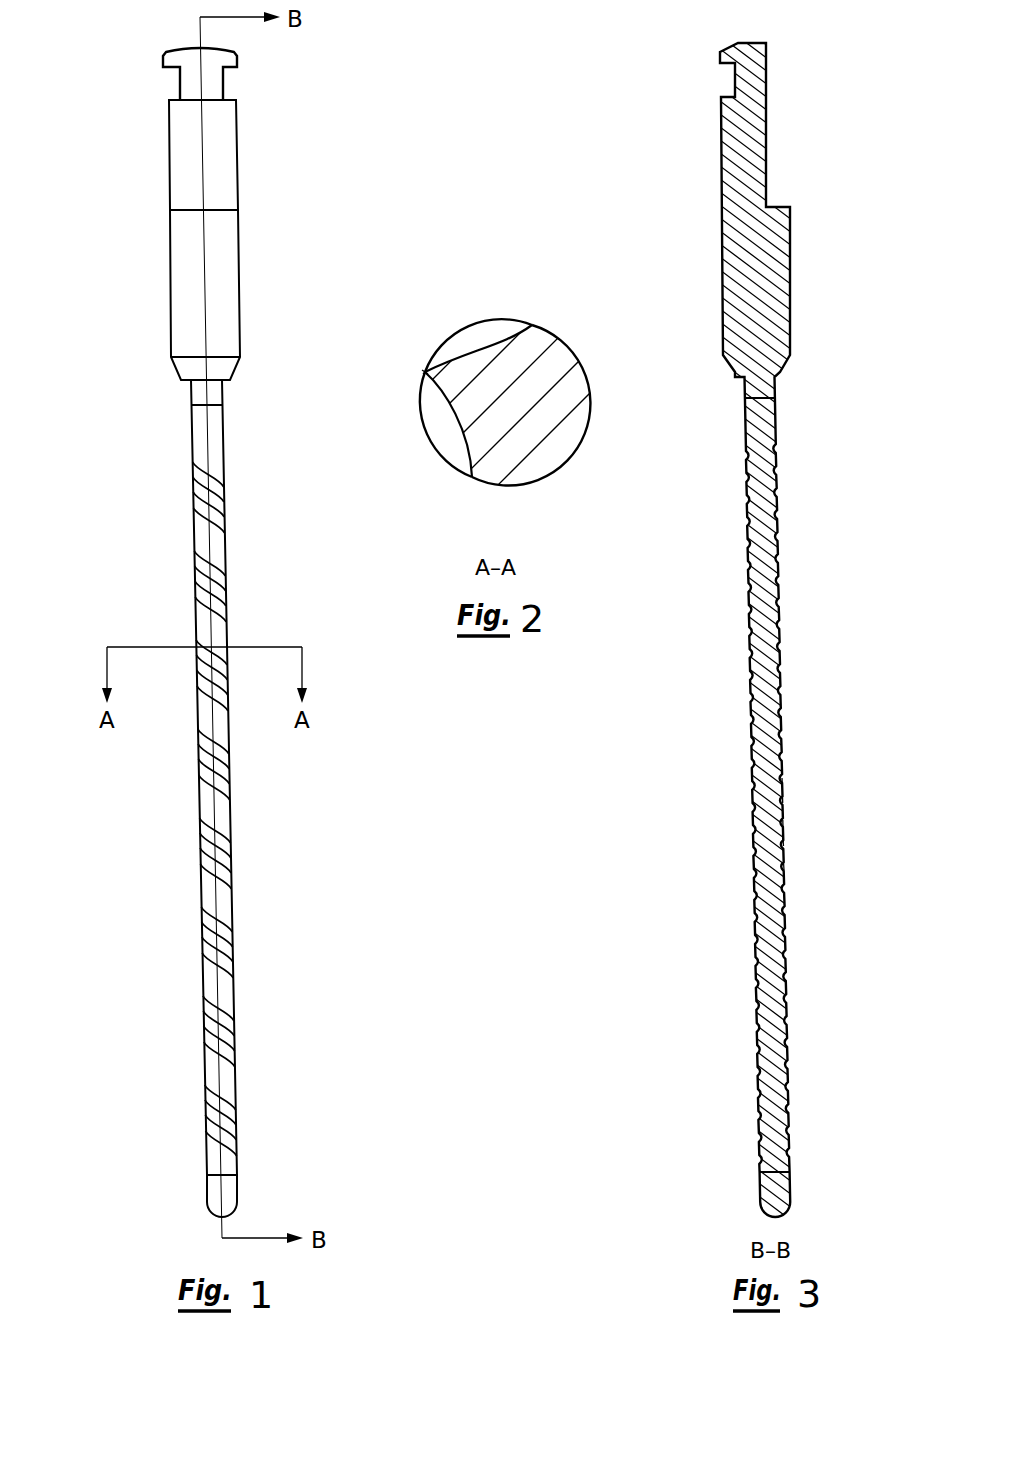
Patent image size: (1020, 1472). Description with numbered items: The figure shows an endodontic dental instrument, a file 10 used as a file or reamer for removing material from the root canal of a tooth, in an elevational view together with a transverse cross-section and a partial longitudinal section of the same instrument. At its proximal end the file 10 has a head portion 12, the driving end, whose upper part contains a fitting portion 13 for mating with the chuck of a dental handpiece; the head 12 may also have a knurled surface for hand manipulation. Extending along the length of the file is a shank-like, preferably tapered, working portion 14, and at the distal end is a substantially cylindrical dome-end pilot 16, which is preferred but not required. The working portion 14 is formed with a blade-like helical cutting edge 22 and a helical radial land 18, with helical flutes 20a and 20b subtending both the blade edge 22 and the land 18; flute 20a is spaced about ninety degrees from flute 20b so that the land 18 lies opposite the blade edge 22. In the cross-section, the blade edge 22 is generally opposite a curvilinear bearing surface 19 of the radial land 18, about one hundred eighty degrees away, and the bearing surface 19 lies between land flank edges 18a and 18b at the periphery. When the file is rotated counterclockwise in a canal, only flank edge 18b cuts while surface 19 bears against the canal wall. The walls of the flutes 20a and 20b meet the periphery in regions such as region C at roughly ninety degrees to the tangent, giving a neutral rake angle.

In FIG. 1, the file 10 is at (146, 40).
In FIG. 1, the head portion 12 is at (224, 252).
In FIG. 1, the fitting portion 13 is at (224, 160).
In FIG. 1, the working portion 14 is at (224, 533).
In FIG. 1, the dome-end pilot 16 is at (207, 1198).
In FIG. 1, the helical radial land 18 is at (199, 790).
In FIG. 2, the helical radial land 18 is at (565, 442).
In FIG. 3, the helical radial land 18 is at (783, 799).
In FIG. 2, the land flank edge 18a is at (472, 477).
In FIG. 3, the land flank edge 18a is at (782, 781).
In FIG. 2, the land flank edge 18b is at (532, 325).
In FIG. 3, the land flank edge 18b is at (782, 825).
In FIG. 2, the bearing surface 19 is at (587, 383).
In FIG. 1, the helical flute 20a is at (229, 880).
In FIG. 2, the helical flute 20a is at (467, 342).
In FIG. 3, the helical flute 20a is at (783, 866).
In FIG. 1, the helical flute 20b is at (201, 822).
In FIG. 2, the helical flute 20b is at (445, 435).
In FIG. 3, the helical flute 20b is at (781, 838).
In FIG. 1, the blade edge 22 is at (202, 840).
In FIG. 2, the blade edge 22 is at (425, 372).
In FIG. 3, the blade edge 22 is at (781, 842).
In FIG. 2, the flute intersection region C is at (425, 372).